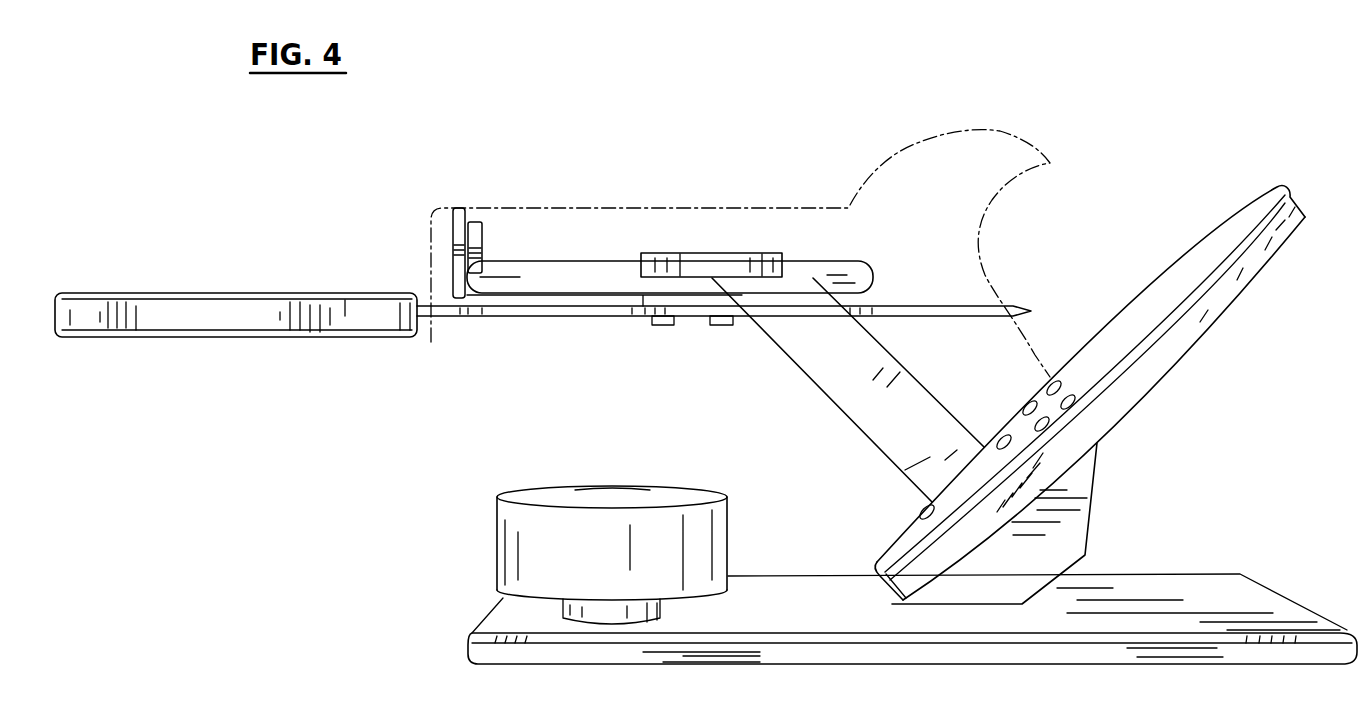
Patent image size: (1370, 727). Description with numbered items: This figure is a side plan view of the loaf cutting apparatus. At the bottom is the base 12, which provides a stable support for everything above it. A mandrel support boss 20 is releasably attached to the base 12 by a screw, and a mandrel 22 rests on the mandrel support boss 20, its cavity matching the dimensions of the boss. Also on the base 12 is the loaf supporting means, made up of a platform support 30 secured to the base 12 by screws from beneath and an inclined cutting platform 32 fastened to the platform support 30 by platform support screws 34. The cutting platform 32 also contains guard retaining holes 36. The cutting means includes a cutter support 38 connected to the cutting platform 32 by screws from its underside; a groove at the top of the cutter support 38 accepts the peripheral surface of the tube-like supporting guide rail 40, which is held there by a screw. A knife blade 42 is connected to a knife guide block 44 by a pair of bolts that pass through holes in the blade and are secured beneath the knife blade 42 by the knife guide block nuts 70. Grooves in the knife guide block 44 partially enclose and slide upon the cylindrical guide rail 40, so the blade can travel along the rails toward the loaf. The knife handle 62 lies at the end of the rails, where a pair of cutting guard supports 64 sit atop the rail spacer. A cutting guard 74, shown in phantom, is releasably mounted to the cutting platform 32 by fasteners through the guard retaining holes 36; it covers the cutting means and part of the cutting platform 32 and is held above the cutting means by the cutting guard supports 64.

The base 12 is at (1255, 598).
The mandrel support boss 20 is at (563, 615).
The mandrel 22 is at (517, 540).
The platform support 30 is at (1015, 587).
The cutting platform 32 is at (1237, 227).
The platform support screws 34 is at (998, 452).
The guard retaining holes 36 is at (1080, 402).
The cutter support 38 is at (862, 404).
The supporting guide rail 40 is at (550, 280).
The knife blade 42 is at (1013, 306).
The knife guide block 44 is at (682, 252).
The knife handle 62 is at (270, 303).
The cutting guard supports 64 is at (473, 222).
The knife guide block nuts 70 is at (720, 326).
The cutting guard 74 is at (802, 205).